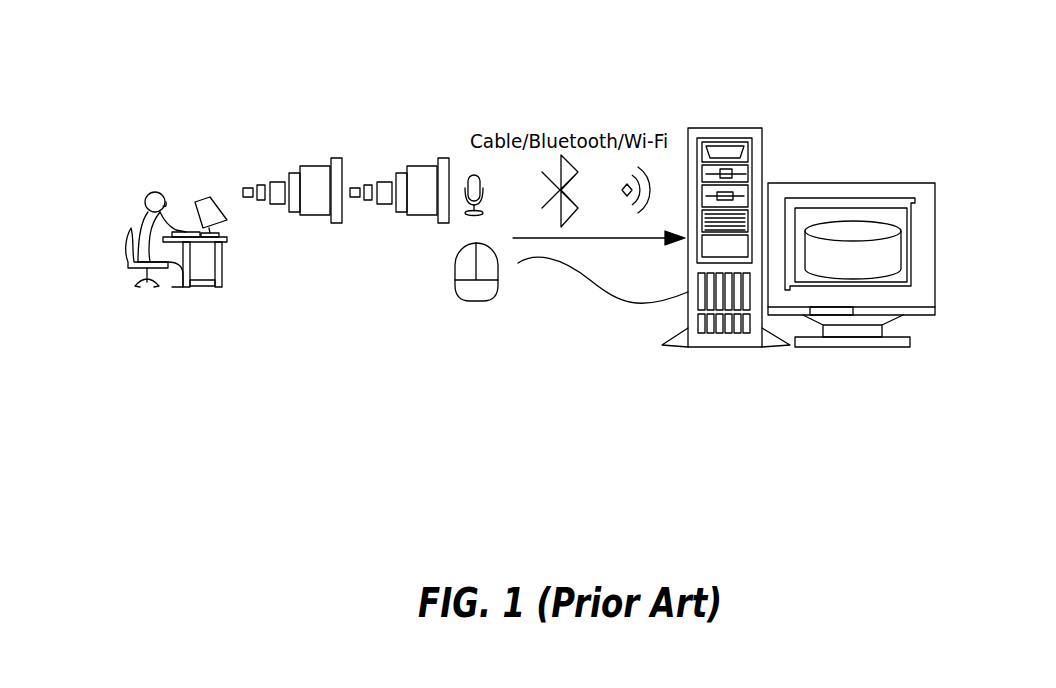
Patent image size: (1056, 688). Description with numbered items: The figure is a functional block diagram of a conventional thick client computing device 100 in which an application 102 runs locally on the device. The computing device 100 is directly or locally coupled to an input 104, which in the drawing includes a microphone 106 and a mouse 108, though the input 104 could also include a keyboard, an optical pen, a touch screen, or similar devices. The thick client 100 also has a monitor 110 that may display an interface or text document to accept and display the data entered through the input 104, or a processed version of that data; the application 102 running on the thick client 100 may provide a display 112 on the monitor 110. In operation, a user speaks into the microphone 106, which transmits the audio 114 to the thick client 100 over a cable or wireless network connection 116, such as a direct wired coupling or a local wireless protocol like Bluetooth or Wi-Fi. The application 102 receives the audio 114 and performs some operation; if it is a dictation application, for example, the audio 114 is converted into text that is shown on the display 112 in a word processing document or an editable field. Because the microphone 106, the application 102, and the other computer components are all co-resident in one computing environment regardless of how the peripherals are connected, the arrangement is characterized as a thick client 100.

The thick client computing device 100 is at (779, 66).
The application 102 is at (897, 242).
The input 104 is at (275, 318).
The microphone 106 is at (470, 175).
The mouse 108 is at (460, 270).
The monitor 110 is at (870, 183).
The display 112 is at (923, 283).
The audio 114 is at (313, 162).
The cable or wireless network connection 116 is at (634, 329).